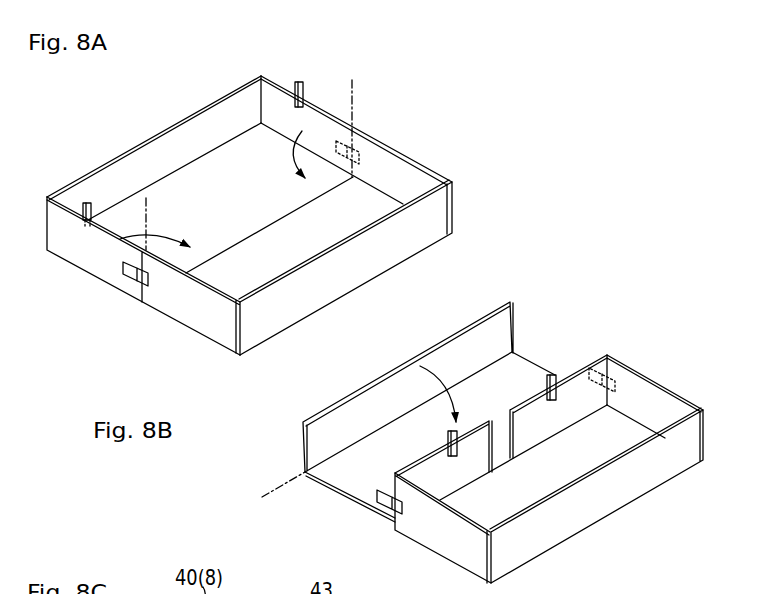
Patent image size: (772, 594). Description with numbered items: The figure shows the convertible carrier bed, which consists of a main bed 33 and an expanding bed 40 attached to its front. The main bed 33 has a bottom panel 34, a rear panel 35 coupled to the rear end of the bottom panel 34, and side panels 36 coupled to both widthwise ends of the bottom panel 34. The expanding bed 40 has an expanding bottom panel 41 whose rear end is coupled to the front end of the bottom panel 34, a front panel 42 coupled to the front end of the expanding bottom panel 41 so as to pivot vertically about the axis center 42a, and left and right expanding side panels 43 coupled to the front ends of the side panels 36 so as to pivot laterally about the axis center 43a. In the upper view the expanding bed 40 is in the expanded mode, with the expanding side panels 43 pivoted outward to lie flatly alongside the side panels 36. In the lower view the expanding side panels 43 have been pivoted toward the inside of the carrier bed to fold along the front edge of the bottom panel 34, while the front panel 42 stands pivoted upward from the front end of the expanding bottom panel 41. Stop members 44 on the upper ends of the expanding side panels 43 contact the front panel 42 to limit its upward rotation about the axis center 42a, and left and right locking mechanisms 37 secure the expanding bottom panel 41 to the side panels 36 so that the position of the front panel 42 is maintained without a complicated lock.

In FIG. 8A, the main bed 33 is at (423, 160).
In FIG. 8B, the main bed 33 is at (624, 359).
In FIG. 8A, the bottom panel 34 is at (260, 258).
In FIG. 8B, the bottom panel 34 is at (513, 488).
In FIG. 8A, the rear panel 35 is at (353, 266).
In FIG. 8B, the rear panel 35 is at (607, 492).
In FIG. 8A, the side panels 36 is at (184, 305).
In FIG. 8B, the side panels 36 is at (437, 533).
In FIG. 8A, the locking mechanisms 37 is at (134, 284).
In FIG. 8B, the locking mechanisms 37 is at (383, 506).
In FIG. 8A, the expanding bed 40 is at (324, 103).
In FIG. 8B, the expanding bed 40 is at (563, 322).
In FIG. 8A, the expanding bottom panel 41 is at (200, 218).
In FIG. 8B, the expanding bottom panel 41 is at (388, 457).
In FIG. 8A, the front panel 42 is at (155, 152).
In FIG. 8B, the front panel 42 is at (357, 410).
In FIG. 8B, the axis center 42a is at (265, 494).
In FIG. 8A, the expanding side panels 43 is at (86, 247).
In FIG. 8B, the expanding side panels 43 is at (513, 402).
In FIG. 8A, the axis center 43a is at (147, 207).
In FIG. 8A, the stop members 44 is at (92, 196).
In FIG. 8B, the stop members 44 is at (459, 450).